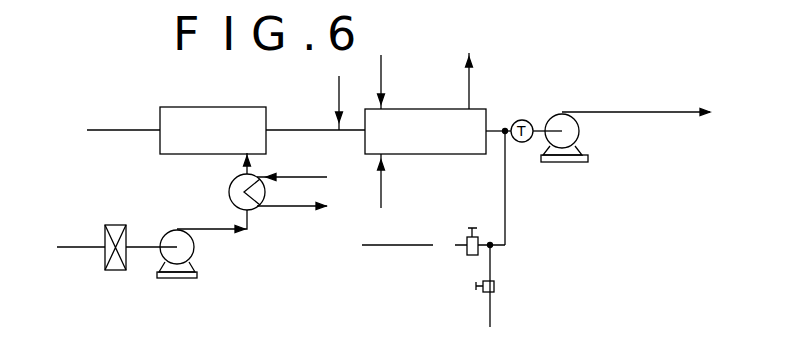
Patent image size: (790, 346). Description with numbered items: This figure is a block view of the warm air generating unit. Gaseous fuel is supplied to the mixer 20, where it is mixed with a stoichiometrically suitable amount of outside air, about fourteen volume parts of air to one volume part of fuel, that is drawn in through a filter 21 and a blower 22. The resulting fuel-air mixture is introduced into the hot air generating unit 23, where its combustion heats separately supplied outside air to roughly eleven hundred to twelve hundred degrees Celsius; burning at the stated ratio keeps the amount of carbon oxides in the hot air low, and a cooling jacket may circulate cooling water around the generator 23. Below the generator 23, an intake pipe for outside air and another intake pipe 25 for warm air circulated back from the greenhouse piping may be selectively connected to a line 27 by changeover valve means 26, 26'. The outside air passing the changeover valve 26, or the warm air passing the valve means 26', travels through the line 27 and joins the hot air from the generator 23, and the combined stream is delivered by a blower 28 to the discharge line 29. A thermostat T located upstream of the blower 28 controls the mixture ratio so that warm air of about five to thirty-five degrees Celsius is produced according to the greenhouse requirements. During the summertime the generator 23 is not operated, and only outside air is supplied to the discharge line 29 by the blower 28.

The mixer 20 is at (188, 107).
The filter 21 is at (112, 225).
The blower 22 is at (200, 270).
The hot air generating unit 23 is at (422, 109).
The intake pipe 25 is at (490, 318).
The changeover valve 26 is at (478, 218).
The changeover valve means 26' is at (518, 268).
The line 27 is at (505, 205).
The blower 28 is at (557, 112).
The discharge line 29 is at (640, 112).